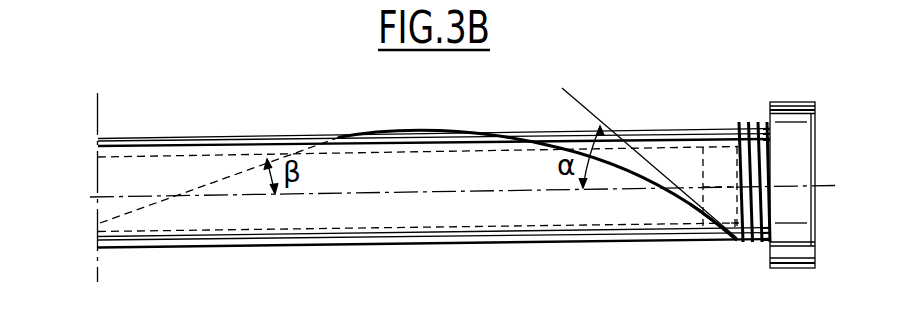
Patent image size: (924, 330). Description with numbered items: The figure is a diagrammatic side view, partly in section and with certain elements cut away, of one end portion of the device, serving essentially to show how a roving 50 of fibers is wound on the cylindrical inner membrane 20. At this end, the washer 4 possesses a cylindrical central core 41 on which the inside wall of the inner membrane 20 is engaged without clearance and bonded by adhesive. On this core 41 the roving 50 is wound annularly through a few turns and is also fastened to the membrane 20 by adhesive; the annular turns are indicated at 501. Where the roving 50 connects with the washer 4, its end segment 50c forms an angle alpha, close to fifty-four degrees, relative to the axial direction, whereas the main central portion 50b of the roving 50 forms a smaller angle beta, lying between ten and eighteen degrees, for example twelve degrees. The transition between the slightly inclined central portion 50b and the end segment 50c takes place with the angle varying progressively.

The washer 4 is at (793, 246).
The inner membrane 20 is at (370, 212).
The cylindrical central portion or core 41 is at (718, 164).
The roving 50 is at (557, 138).
The main (central) portion of the roving 50b is at (219, 178).
The end segment of the roving 50c is at (698, 212).
The retaining rings 501 is at (752, 122).